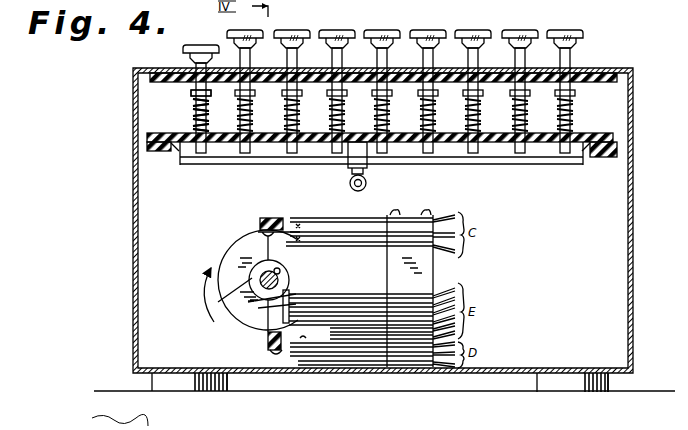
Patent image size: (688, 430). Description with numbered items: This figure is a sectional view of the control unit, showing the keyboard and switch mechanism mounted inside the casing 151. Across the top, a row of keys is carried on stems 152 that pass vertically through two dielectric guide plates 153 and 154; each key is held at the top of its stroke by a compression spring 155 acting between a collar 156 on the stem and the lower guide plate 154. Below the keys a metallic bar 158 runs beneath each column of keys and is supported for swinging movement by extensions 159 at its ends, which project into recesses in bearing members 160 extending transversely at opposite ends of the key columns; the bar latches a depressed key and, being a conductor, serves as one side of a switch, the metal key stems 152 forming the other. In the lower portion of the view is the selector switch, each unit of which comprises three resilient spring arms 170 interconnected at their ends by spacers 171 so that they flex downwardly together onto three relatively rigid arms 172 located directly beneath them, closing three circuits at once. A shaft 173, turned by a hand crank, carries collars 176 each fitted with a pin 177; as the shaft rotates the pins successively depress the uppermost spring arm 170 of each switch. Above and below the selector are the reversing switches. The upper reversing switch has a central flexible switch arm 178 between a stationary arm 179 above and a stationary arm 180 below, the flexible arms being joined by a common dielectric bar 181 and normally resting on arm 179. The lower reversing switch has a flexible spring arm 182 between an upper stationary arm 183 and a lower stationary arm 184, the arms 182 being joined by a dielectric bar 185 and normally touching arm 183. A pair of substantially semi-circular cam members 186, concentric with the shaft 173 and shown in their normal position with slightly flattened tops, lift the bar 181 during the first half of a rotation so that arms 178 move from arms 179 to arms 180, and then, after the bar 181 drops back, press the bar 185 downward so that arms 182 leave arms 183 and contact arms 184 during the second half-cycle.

The casing 151 is at (131, 214).
The stem 152 is at (196, 93).
The guide plate 153 is at (628, 86).
The guide plate 154 is at (613, 136).
The compression spring 155 is at (192, 118).
The collar 156 is at (190, 104).
The bar 158 is at (482, 170).
The extensions 159 is at (170, 151).
The bearing members 160 is at (146, 147).
The spring arms 170 is at (320, 337).
The spacers 171 is at (264, 312).
The rigid arms 172 is at (338, 323).
The shaft 173 is at (218, 302).
The collars 176 is at (244, 252).
The pin 177 is at (281, 273).
The flexible switch arm 178 is at (349, 232).
The stationary spring arm 179 is at (314, 233).
The stationary spring arm 180 is at (332, 221).
The dielectric bar 181 is at (260, 218).
The flexible spring arm 182 is at (353, 352).
The stationary arm 183 is at (317, 347).
The stationary arm 184 is at (320, 362).
The dielectric bar 185 is at (267, 340).
The cam members 186 is at (246, 237).